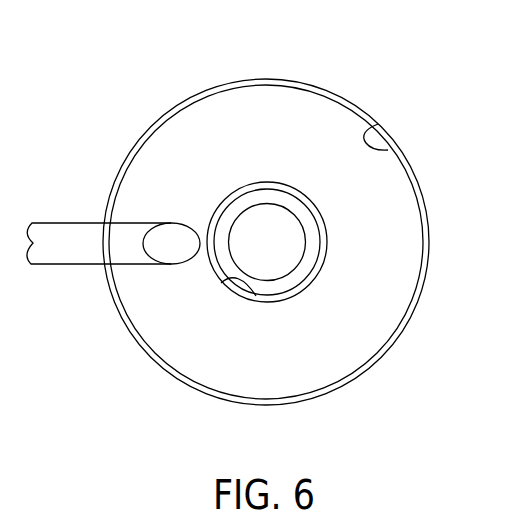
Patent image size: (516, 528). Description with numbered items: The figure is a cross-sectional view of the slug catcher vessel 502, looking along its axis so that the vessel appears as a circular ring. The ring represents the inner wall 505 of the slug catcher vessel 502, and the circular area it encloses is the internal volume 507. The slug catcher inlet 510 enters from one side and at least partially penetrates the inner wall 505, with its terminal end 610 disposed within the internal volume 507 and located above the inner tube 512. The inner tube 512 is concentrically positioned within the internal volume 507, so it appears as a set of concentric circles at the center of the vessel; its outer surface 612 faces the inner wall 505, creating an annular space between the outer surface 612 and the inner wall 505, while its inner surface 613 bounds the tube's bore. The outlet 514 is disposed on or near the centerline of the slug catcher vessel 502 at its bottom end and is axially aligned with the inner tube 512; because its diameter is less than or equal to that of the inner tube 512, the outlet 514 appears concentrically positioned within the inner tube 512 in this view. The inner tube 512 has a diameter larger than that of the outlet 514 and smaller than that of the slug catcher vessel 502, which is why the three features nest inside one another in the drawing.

The slug catcher vessel 502 is at (337, 390).
The inner wall 505 is at (370, 128).
The internal volume 507 is at (193, 130).
The slug catcher inlet 510 is at (53, 223).
The inner tube 512 is at (316, 223).
The outlet 514 is at (300, 265).
The terminal end 610 is at (183, 265).
The outer surface 612 is at (260, 182).
The inner surface 613 is at (227, 280).